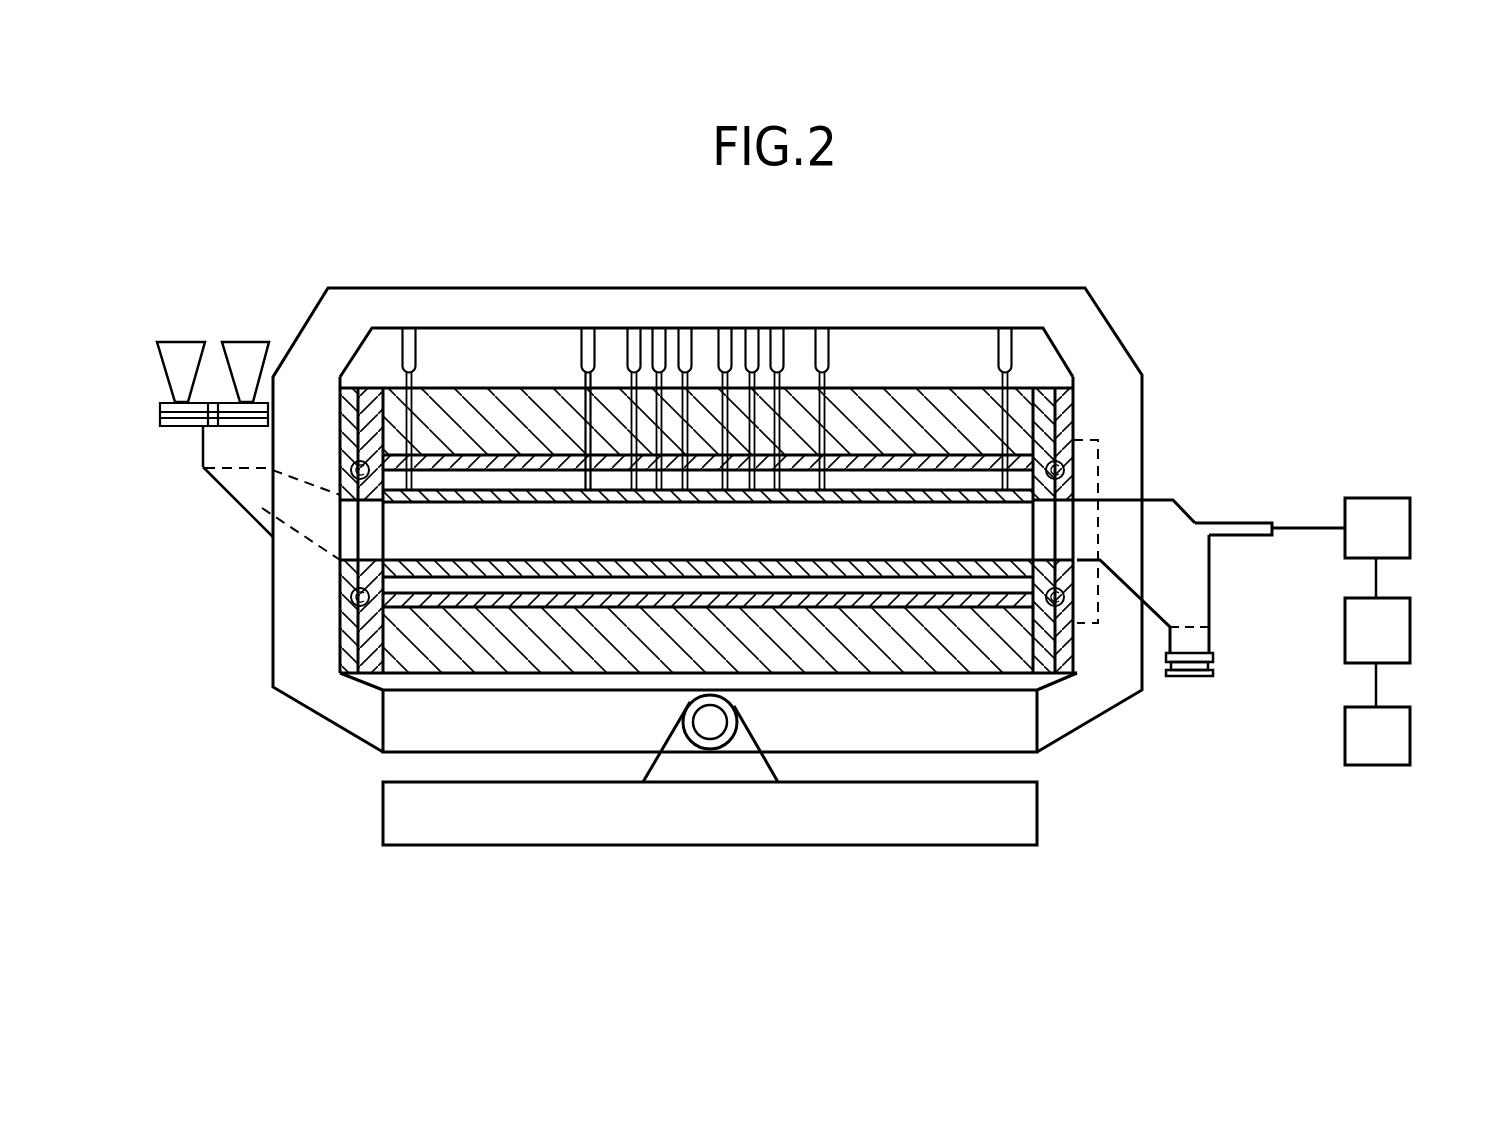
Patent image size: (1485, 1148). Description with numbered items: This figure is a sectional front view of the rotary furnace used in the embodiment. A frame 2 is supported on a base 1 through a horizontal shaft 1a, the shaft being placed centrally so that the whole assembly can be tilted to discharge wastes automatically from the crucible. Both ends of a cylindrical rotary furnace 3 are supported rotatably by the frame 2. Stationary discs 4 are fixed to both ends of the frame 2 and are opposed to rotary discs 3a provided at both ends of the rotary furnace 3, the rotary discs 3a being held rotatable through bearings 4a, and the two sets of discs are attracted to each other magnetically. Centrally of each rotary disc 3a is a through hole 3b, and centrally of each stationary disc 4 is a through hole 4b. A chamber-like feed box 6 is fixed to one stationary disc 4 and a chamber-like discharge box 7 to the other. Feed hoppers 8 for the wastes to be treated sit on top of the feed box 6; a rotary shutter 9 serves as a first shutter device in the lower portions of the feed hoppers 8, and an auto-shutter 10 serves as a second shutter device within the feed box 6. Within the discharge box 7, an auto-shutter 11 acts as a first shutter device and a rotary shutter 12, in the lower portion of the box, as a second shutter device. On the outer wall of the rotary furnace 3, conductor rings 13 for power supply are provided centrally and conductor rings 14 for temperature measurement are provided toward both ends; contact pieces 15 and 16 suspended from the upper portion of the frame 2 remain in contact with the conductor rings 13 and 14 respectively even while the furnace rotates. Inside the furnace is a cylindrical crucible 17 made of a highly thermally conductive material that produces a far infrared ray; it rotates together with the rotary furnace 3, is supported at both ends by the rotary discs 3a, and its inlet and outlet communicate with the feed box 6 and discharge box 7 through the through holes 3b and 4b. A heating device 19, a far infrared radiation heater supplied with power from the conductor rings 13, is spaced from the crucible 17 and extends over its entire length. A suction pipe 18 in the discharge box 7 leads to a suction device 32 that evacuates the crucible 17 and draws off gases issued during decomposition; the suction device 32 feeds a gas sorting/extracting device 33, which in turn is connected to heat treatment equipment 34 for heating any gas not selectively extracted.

The base 1 is at (1030, 820).
The horizontal shaft 1a is at (710, 728).
The frame 2 is at (1098, 343).
The rotary furnace 3 is at (787, 454).
The rotary disc 3a is at (1040, 392).
The through hole 3b is at (1047, 518).
The stationary disc 4 is at (1077, 407).
The bearing 4a is at (1063, 407).
The through hole 4b is at (1067, 540).
The feed box 6 is at (252, 486).
The discharge box 7 is at (1183, 578).
The feed hopper 8 is at (180, 352).
The rotary shutter 9 is at (160, 415).
The auto-shutter 10 is at (228, 445).
The auto-shutter 11 is at (1190, 638).
The rotary shutter 12 is at (1213, 670).
The conductor ring 13 is at (728, 407).
The conductor ring 14 is at (412, 413).
The contact piece 15 is at (727, 337).
The contact piece 16 is at (410, 337).
The crucible 17 is at (917, 490).
The suction pipe 18 is at (1232, 523).
The heating device 19 is at (617, 403).
The suction device 32 is at (1390, 530).
The gas sorting/extracting device 33 is at (1395, 638).
The heat treatment equipment 34 is at (1393, 738).